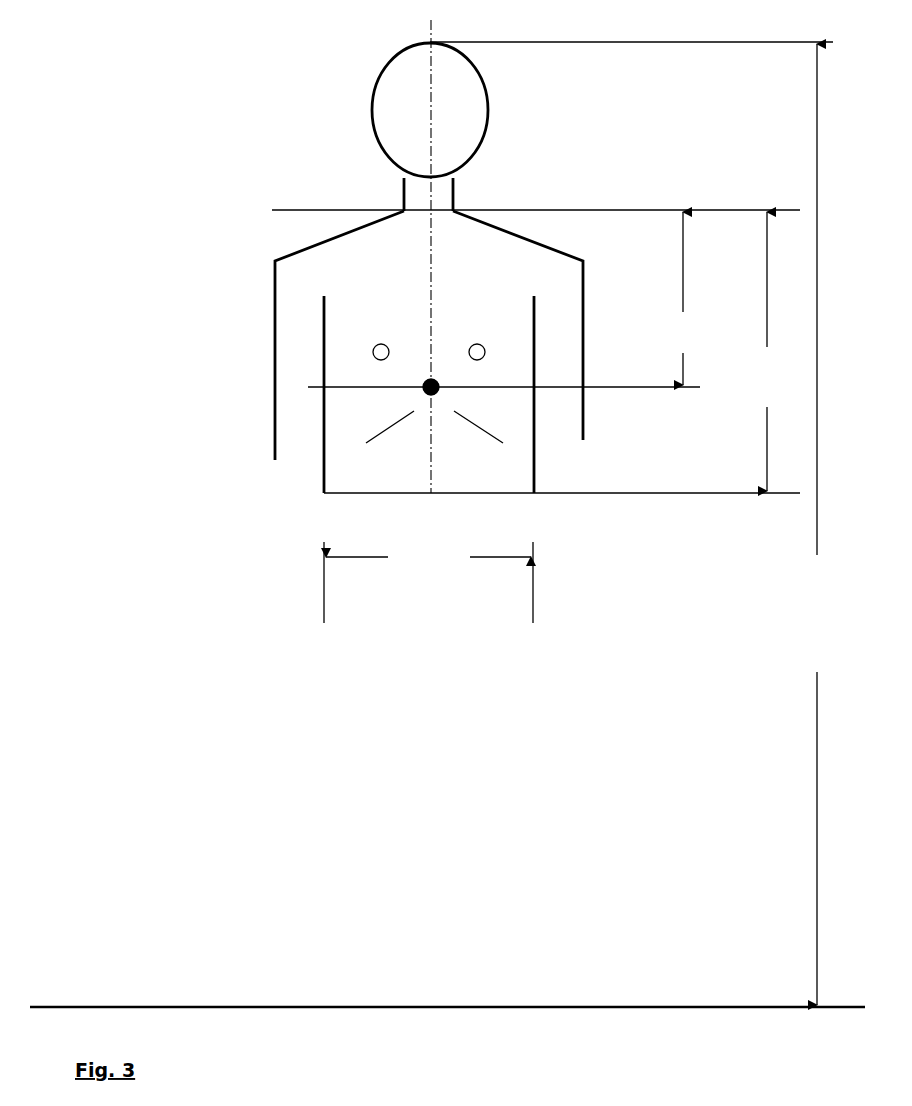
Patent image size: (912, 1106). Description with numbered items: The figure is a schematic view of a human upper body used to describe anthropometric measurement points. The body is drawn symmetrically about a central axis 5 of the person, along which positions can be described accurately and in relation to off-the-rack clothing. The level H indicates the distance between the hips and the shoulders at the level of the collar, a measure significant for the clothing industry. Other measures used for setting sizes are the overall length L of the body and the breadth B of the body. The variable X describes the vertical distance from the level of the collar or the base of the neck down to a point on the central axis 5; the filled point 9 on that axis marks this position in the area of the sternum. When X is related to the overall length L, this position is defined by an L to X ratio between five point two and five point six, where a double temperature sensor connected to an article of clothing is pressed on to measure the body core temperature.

The central axis 5 is at (368, 268).
The center point / aiming point 9 is at (272, 440).
The variable X is at (682, 298).
The level H is at (766, 351).
The overall length L is at (817, 524).
The breadth B is at (428, 582).